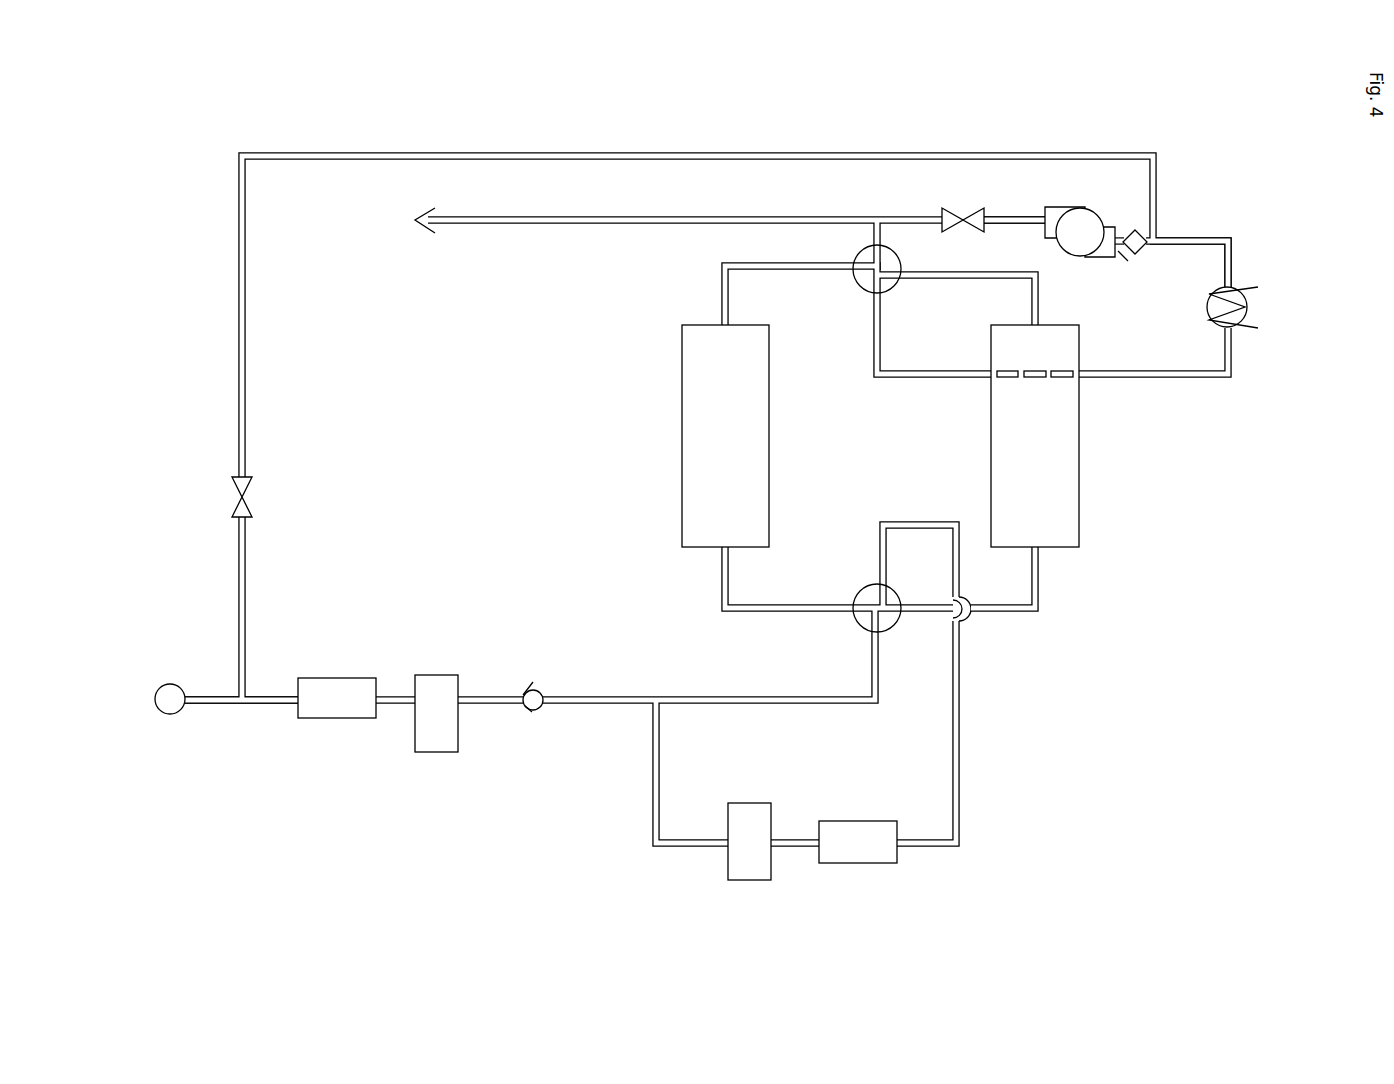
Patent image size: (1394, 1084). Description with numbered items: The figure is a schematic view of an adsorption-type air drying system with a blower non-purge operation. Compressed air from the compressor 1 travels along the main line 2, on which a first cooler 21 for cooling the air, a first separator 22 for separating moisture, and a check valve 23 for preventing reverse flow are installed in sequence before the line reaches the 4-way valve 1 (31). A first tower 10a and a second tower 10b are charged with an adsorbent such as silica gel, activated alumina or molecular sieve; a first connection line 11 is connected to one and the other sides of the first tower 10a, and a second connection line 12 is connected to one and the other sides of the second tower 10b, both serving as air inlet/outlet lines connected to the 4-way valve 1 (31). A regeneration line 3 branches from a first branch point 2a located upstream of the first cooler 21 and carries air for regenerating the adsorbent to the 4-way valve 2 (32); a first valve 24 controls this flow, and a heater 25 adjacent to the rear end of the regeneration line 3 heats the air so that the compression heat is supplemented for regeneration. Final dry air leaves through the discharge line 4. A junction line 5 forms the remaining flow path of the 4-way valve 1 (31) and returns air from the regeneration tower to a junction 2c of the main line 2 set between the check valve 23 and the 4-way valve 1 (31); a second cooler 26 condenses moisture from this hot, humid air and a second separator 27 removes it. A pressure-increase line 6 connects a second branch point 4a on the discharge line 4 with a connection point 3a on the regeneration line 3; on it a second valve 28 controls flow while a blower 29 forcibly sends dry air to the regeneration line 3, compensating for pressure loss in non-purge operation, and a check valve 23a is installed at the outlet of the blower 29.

The compressor 1 is at (170, 714).
The main line 2 is at (601, 703).
The first branch point 2a is at (242, 703).
The junction 2c is at (657, 697).
The regeneration line 3 is at (245, 410).
The connection point 3a is at (1158, 238).
The discharge line 4 is at (634, 217).
The second branch point 4a is at (878, 217).
The junction line 5 is at (959, 735).
The pressure-increase line 6 is at (1018, 217).
The first tower 10a is at (682, 490).
The second tower 10b is at (1077, 506).
The first connection line 11 is at (722, 305).
The second connection line 12 is at (1037, 288).
The first cooler 21 is at (337, 718).
The first separator 22 is at (437, 752).
The check valve 23 is at (531, 712).
The check valve 23a is at (1140, 231).
The first valve 24 is at (252, 500).
The heater 25 is at (1207, 312).
The second cooler 26 is at (855, 821).
The second separator 27 is at (753, 803).
The second valve 28 is at (965, 207).
The blower 29 is at (1082, 207).
The 4-way valve 1 31 is at (903, 633).
The 4-way valve 2 32 is at (902, 270).